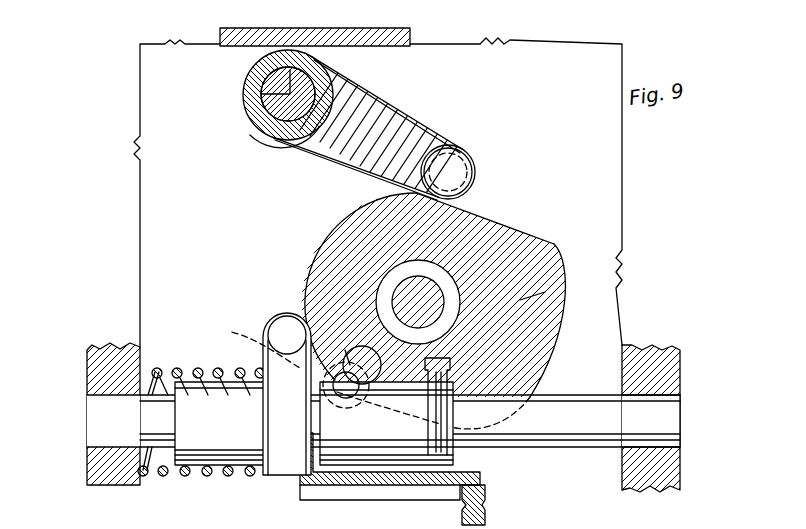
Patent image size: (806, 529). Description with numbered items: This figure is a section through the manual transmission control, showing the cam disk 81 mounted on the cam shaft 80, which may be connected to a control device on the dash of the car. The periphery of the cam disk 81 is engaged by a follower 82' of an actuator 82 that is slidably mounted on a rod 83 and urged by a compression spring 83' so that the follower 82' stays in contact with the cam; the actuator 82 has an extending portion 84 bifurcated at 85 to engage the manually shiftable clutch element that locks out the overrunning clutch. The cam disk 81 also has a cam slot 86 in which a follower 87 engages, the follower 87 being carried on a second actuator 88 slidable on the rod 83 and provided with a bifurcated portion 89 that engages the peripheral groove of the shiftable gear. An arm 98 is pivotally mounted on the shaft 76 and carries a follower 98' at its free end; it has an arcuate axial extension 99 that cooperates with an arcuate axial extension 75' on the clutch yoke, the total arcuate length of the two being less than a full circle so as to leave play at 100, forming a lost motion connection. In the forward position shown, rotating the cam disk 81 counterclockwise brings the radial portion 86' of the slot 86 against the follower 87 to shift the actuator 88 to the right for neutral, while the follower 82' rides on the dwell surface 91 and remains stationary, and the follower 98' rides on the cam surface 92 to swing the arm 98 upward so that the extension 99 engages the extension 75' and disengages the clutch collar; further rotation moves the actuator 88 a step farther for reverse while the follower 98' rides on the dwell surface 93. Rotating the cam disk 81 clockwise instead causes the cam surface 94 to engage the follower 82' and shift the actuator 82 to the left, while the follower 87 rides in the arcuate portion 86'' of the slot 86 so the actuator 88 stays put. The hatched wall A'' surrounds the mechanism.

The arcuate axial extension 99 is at (290, 58).
The play 100 is at (265, 105).
The shaft 76 is at (282, 77).
The arcuate axial extension 75' is at (266, 150).
The arm 98 is at (367, 129).
The follower 98' is at (467, 151).
The dwell surface 91 is at (332, 236).
The cam surface 92 is at (518, 240).
The dwell surface 93 is at (556, 352).
The cam disk 81 is at (545, 292).
The cam shaft 80 is at (421, 296).
The frame wall A'' is at (83, 414).
The actuator 82 is at (222, 423).
The rod 83 is at (206, 369).
The compression spring 83' is at (196, 480).
The extending portion 84 is at (372, 495).
The bifurcated portion 85 is at (486, 514).
The actuator 88 is at (455, 460).
The bifurcated portion 89 is at (440, 372).
The follower 82' is at (266, 384).
The cam surface 94 is at (251, 343).
The follower 87 is at (356, 348).
The cam slot 86 is at (375, 377).
The arcuate portion 86'' is at (374, 391).
The radial portion 86' is at (307, 314).